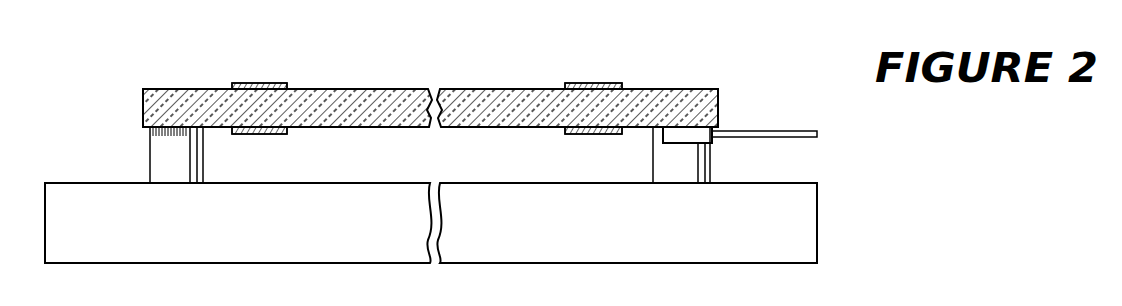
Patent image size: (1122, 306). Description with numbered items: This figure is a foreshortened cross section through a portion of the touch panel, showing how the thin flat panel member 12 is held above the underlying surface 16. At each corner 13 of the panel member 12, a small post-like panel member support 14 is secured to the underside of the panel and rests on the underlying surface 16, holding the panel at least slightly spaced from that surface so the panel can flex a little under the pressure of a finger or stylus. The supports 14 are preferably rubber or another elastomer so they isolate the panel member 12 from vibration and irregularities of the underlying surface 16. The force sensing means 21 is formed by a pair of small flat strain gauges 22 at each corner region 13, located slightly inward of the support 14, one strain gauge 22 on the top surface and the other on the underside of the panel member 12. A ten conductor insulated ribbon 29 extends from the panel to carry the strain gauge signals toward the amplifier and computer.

The panel member 12 is at (478, 89).
The corner 13 is at (138, 82).
The panel member support 14 is at (162, 152).
The underlying surface 16 is at (367, 181).
The force sensing means 21 is at (250, 68).
The strain gauge 22 is at (282, 84).
The ten conductor insulated ribbon 29 is at (795, 130).